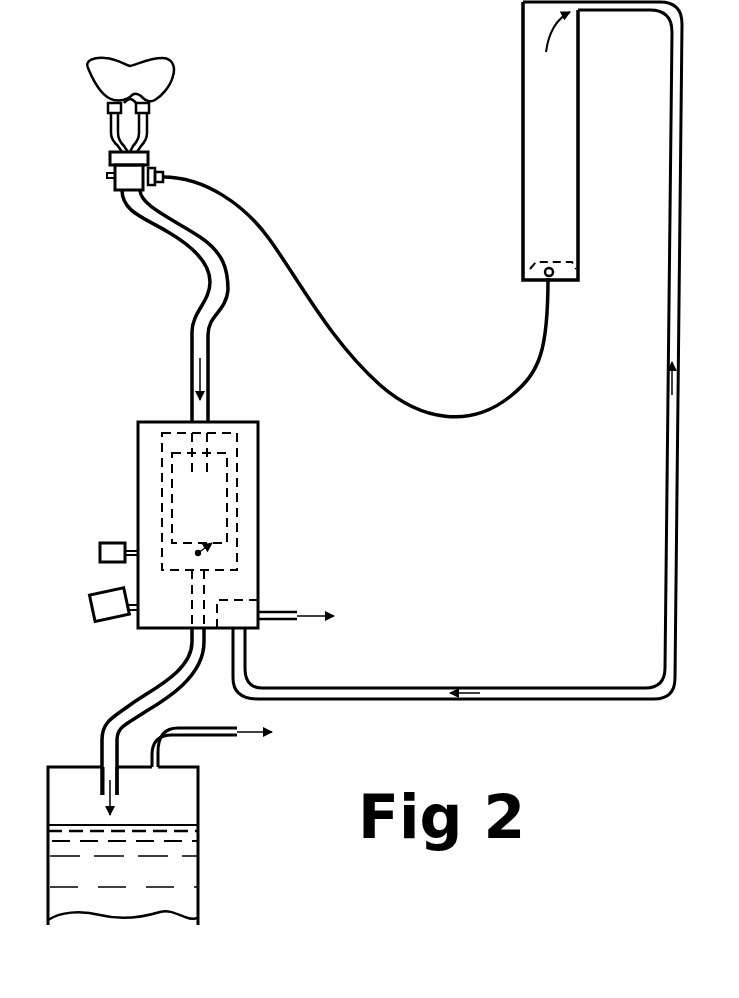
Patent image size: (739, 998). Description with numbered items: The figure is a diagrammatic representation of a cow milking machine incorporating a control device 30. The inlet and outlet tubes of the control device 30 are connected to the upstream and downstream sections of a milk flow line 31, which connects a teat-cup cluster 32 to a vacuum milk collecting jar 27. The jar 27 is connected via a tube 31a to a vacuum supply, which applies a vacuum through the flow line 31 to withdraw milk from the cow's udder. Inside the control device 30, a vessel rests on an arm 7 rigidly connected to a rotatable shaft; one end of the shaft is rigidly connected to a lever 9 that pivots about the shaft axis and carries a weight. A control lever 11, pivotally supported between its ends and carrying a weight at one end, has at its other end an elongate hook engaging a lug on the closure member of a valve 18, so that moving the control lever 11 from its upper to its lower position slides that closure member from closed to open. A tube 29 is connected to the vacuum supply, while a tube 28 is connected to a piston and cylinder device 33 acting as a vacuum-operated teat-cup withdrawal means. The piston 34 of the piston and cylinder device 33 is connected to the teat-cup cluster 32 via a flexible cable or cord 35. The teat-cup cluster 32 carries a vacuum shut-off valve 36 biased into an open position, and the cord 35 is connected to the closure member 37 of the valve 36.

The arm 7 is at (200, 553).
The lever 9 is at (130, 545).
The control lever 11 is at (125, 619).
The valve 18 is at (245, 600).
The vacuum milk collecting jar 27 is at (199, 815).
The tube 28 is at (245, 668).
The tube 29 is at (290, 624).
The control device 30 is at (262, 437).
The milk flow line 31 is at (210, 342).
The tube 31a is at (258, 776).
The teat-cup cluster 32 is at (152, 150).
The piston and cylinder device 33 is at (519, 112).
The piston 34 is at (541, 268).
The flexible cable or cord 35 is at (297, 270).
The vacuum shut-off valve 36 is at (115, 182).
The closure member 37 is at (165, 176).